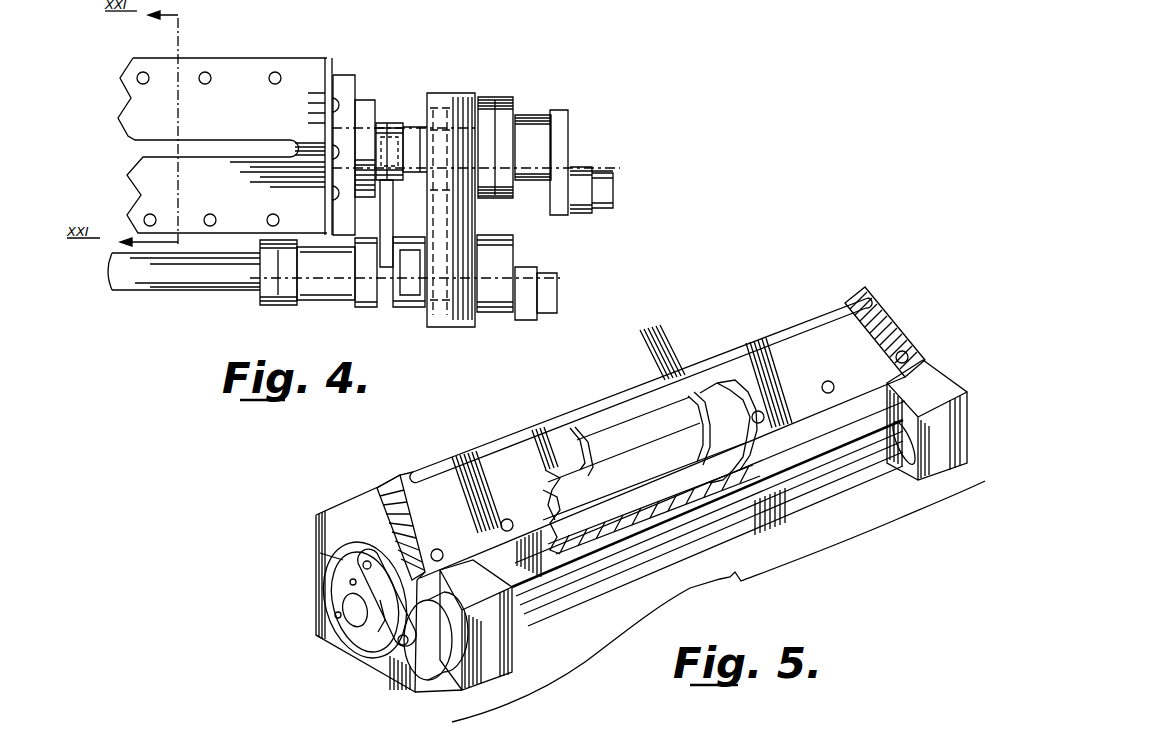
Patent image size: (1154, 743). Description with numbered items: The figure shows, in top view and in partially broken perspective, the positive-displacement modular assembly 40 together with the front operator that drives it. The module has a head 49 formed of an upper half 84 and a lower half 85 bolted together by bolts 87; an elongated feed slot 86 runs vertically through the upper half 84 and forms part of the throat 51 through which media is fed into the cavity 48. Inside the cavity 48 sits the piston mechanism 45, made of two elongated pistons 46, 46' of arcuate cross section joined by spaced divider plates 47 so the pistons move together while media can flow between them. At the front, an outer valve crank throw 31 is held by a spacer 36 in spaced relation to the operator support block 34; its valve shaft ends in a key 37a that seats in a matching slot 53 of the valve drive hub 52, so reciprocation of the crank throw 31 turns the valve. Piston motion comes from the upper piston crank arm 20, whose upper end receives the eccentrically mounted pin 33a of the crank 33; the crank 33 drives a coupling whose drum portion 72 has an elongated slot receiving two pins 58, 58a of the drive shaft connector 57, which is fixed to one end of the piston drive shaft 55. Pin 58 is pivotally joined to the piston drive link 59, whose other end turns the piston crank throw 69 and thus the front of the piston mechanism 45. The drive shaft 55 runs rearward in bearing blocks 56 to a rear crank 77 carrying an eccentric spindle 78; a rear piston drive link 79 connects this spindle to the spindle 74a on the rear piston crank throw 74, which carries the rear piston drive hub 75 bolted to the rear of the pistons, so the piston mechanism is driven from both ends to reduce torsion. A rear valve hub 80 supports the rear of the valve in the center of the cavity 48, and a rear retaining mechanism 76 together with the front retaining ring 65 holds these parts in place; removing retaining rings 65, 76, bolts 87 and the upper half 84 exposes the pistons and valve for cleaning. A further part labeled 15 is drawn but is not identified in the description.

In FIG. 4, the drive shaft 15 is at (578, 165).
In FIG. 4, the upper piston crank arm 20 is at (525, 320).
In FIG. 4, the outer valve crank throw 31 is at (560, 112).
In FIG. 4, the crank 33 is at (515, 248).
In FIG. 4, the eccentrically-mounted pin 33a is at (560, 293).
In FIG. 4, the operator support block 34 is at (437, 327).
In FIG. 4, the spacer 36 is at (490, 98).
In FIG. 4, the key 37a is at (430, 125).
In FIG. 5, the positive-displacement modular assembly 40 is at (718, 601).
In FIG. 5, the piston mechanism 45 is at (613, 437).
In FIG. 5, the elongated piston 46 is at (651, 488).
In FIG. 5, the elongated piston 46' is at (712, 406).
In FIG. 5, the divider plates 47 is at (573, 432).
In FIG. 5, the cavity 48 is at (560, 480).
In FIG. 4, the head 49 is at (287, 58).
In FIG. 5, the head 49 is at (393, 474).
In FIG. 4, the throat 51 is at (168, 143).
In FIG. 5, the throat 51 is at (594, 423).
In FIG. 4, the valve drive hub 52 is at (380, 122).
In FIG. 4, the slot 53 is at (412, 115).
In FIG. 4, the piston drive shaft 55 is at (168, 290).
In FIG. 5, the piston drive shaft 55 is at (810, 470).
In FIG. 4, the bearing blocks 56 is at (275, 288).
In FIG. 5, the bearing blocks 56 is at (503, 643).
In FIG. 4, the drive shaft connector 57 is at (318, 302).
In FIG. 4, the pin 58 is at (393, 228).
In FIG. 4, the pin 58a is at (372, 308).
In FIG. 4, the piston drive link 59 is at (345, 208).
In FIG. 4, the retaining ring 65 is at (333, 60).
In FIG. 4, the piston crank throw 69 is at (363, 100).
In FIG. 4, the drum portion 72 is at (408, 307).
In FIG. 5, the rear piston crank throw 74 is at (320, 553).
In FIG. 5, the spindle 74a is at (458, 515).
In FIG. 5, the rear piston drive hub 75 is at (329, 578).
In FIG. 5, the rear retaining mechanism 76 is at (328, 563).
In FIG. 5, the rear crank 77 is at (467, 687).
In FIG. 5, the spindle 78 is at (397, 647).
In FIG. 5, the rear piston drive link 79 is at (357, 612).
In FIG. 5, the rear valve hub 80 is at (350, 628).
In FIG. 5, the upper head half 84 is at (347, 507).
In FIG. 5, the lower head half 85 is at (321, 636).
In FIG. 4, the elongated feed slot 86 is at (248, 146).
In FIG. 5, the elongated feed slot 86 is at (483, 427).
In FIG. 4, the bolts 87 is at (271, 72).
In FIG. 5, the bolts 87 is at (823, 386).